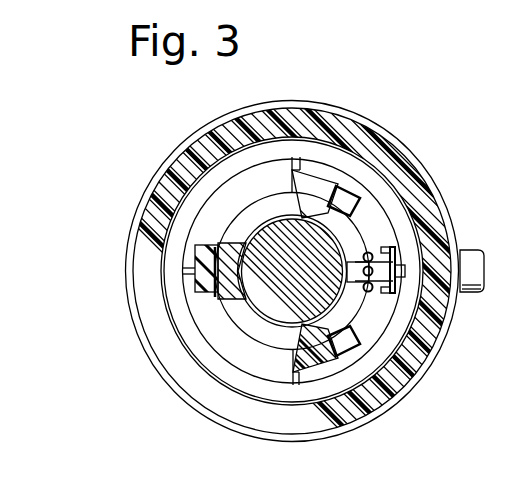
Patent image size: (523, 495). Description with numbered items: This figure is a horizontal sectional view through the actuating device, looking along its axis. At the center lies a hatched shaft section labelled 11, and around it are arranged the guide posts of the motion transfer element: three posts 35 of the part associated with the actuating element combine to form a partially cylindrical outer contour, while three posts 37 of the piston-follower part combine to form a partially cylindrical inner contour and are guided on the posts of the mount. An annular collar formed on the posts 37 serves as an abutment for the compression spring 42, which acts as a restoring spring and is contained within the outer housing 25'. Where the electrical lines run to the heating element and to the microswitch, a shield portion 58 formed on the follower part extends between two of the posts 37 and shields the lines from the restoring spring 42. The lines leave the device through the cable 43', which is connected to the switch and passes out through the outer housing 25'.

The shaft 11 is at (266, 248).
The outer housing 25' is at (261, 247).
The posts 35 is at (356, 190).
The posts 37 is at (322, 182).
The compression spring 42 is at (274, 148).
The cable 43' is at (476, 240).
The shield portion 58 is at (440, 353).